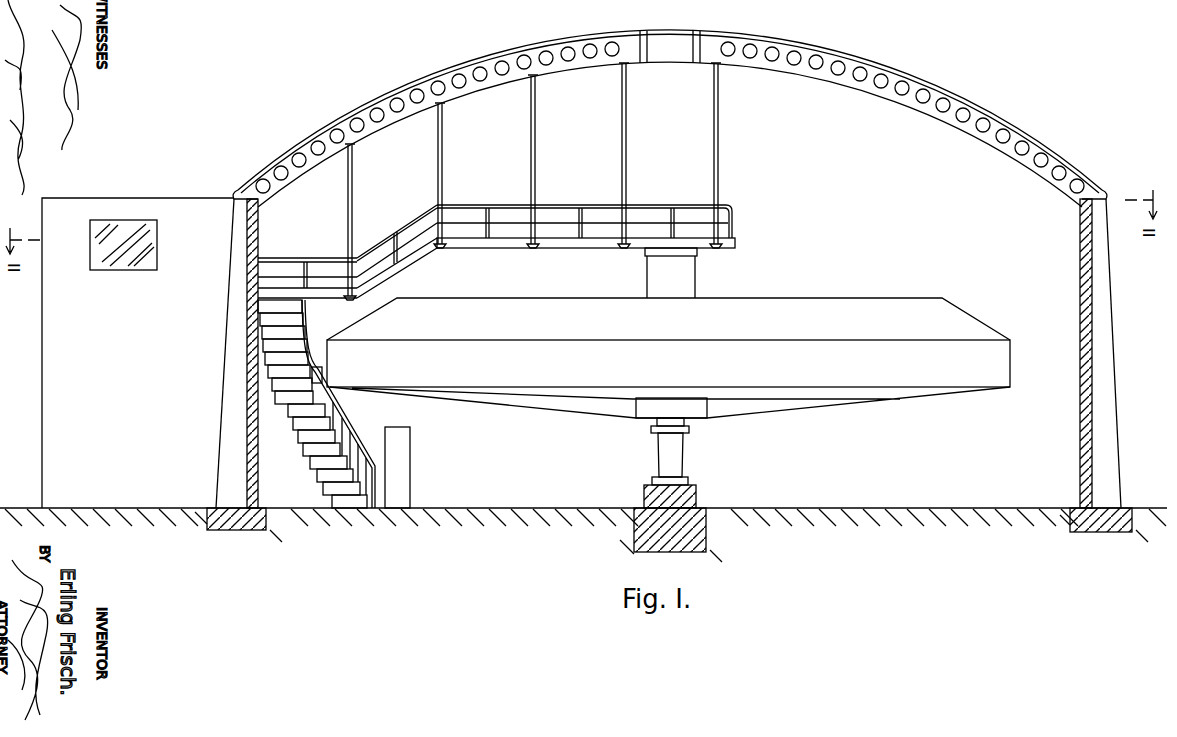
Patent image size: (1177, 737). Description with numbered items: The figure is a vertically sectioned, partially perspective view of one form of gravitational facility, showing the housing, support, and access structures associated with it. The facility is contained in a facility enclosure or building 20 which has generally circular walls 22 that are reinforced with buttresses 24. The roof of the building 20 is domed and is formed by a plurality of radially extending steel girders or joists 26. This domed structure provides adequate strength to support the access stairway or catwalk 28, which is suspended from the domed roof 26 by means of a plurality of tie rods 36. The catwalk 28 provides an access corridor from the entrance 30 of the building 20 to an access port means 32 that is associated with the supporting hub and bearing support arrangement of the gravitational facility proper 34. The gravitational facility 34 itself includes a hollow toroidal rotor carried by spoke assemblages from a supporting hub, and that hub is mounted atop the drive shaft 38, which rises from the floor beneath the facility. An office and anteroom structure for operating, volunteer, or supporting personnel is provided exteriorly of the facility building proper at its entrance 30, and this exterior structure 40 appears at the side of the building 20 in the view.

The facility enclosure or building 20 is at (868, 181).
The circular walls 22 is at (1088, 347).
The buttresses 24 is at (233, 353).
The steel girders or joists 26 is at (715, 42).
The access stairway or catwalk 28 is at (483, 249).
The entrance 30 is at (407, 461).
The access port means 32 is at (690, 286).
The gravitational facility 34 is at (845, 306).
The tie rods 36 is at (440, 168).
The drive shaft 38 is at (688, 424).
The building 40 is at (150, 198).